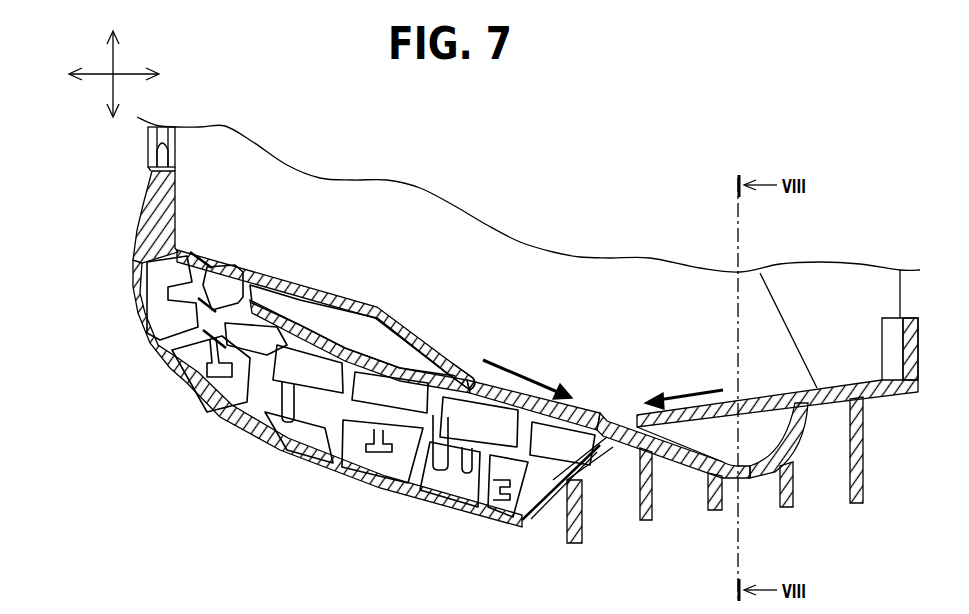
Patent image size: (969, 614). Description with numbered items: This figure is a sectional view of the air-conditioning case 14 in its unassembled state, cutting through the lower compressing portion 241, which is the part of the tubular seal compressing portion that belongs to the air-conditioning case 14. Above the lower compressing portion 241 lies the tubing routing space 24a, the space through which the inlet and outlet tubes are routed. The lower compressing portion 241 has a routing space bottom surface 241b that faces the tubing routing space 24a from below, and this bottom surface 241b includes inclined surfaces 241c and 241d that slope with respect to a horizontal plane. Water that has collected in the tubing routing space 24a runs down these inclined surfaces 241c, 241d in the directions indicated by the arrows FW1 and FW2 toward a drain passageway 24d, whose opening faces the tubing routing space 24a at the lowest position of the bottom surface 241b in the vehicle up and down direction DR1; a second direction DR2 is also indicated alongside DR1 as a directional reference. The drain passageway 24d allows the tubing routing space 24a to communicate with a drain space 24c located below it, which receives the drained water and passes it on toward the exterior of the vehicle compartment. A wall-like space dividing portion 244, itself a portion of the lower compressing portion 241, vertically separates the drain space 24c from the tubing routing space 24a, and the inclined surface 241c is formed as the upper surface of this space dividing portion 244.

The air-conditioning case 14 is at (879, 243).
The tubing routing space 24a is at (585, 373).
The drain space 24c is at (762, 436).
The drain passageway 24d is at (622, 422).
The lower compressing portion 241 is at (378, 489).
The routing space bottom surface 241b is at (438, 352).
The inclined surface 241c is at (763, 392).
The inclined surface 241d is at (472, 360).
The space dividing portion 244 is at (713, 412).
The water flow arrow FW1 is at (690, 388).
The water flow arrow FW2 is at (517, 368).
The vehicle up and down direction DR1 is at (113, 53).
The direction 2 DR2 is at (126, 72).